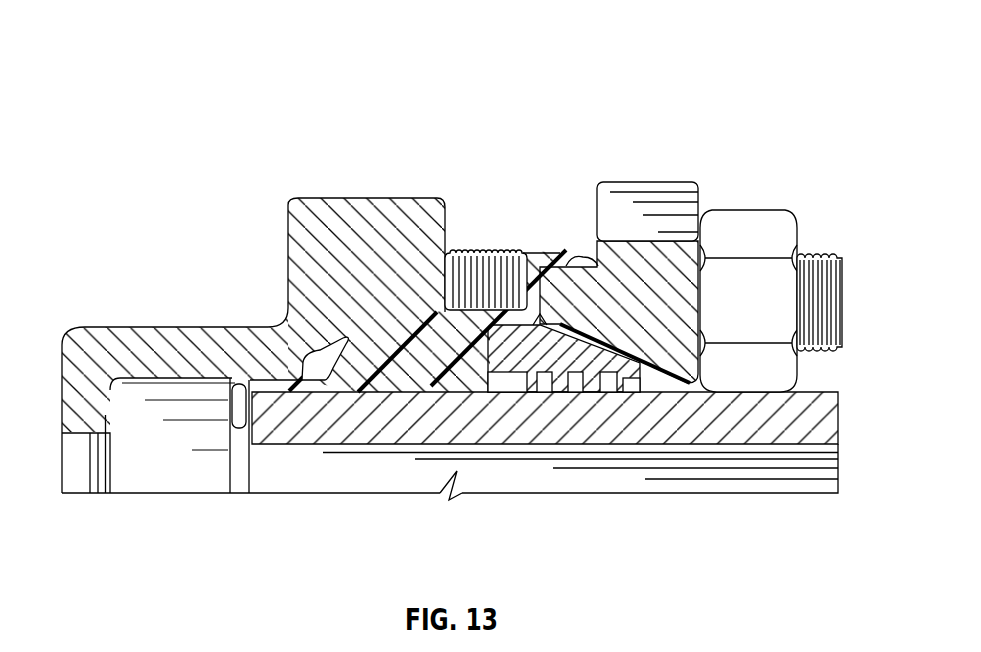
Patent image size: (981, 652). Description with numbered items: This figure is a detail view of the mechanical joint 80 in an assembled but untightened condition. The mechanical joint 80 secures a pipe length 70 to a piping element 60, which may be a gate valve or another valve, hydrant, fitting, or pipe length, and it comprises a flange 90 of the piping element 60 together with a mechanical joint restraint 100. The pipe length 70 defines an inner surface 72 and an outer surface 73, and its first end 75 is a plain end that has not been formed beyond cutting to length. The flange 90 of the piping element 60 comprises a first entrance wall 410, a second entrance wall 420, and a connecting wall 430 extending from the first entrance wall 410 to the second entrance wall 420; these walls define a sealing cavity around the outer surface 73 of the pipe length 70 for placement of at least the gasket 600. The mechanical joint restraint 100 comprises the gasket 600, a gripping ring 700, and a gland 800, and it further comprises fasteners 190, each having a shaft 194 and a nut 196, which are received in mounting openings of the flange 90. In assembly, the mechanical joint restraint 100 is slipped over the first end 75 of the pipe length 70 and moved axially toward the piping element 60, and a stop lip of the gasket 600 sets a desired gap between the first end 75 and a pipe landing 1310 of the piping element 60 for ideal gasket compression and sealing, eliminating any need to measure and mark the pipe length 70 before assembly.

The mechanical joint 80 is at (161, 36).
The piping element 60 is at (158, 328).
The flange 90 is at (352, 198).
The connecting wall 430 is at (347, 340).
The second entrance wall 420 is at (195, 380).
The pipe landing 1310 is at (104, 430).
The first end 75 is at (245, 478).
The pipe length 70 is at (818, 476).
The inner surface 72 is at (580, 466).
The gasket 600 is at (385, 380).
The shaft 194 is at (497, 256).
The gripping ring 700 is at (430, 262).
The first entrance wall 410 is at (510, 378).
The gland 800 is at (652, 365).
The mechanical joint restraint 100 is at (652, 186).
The fasteners 190 is at (748, 226).
The nut 196 is at (748, 300).
The outer surface 73 is at (822, 392).